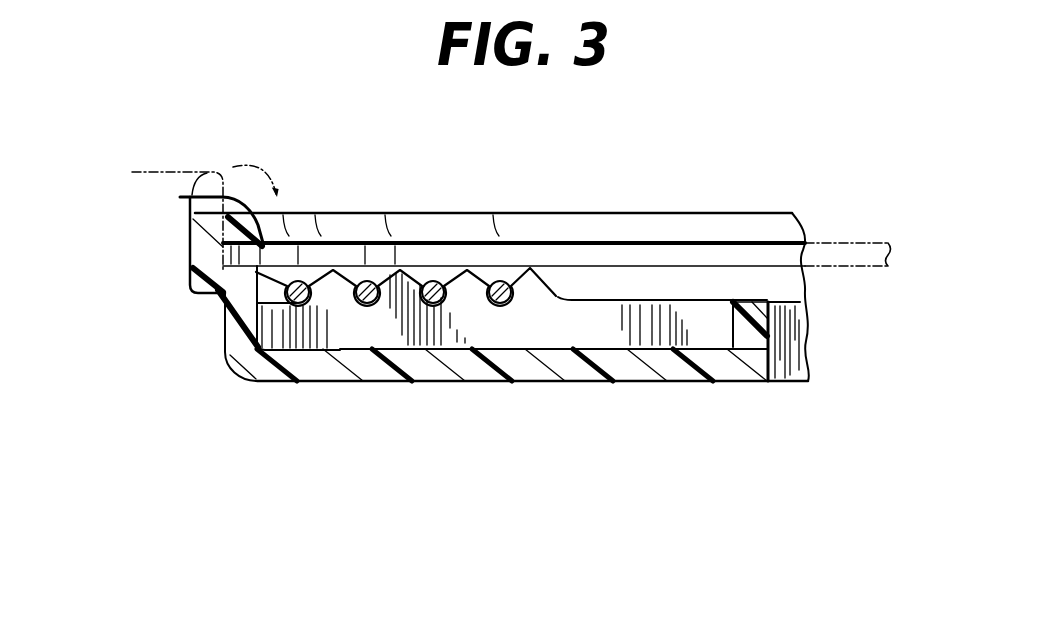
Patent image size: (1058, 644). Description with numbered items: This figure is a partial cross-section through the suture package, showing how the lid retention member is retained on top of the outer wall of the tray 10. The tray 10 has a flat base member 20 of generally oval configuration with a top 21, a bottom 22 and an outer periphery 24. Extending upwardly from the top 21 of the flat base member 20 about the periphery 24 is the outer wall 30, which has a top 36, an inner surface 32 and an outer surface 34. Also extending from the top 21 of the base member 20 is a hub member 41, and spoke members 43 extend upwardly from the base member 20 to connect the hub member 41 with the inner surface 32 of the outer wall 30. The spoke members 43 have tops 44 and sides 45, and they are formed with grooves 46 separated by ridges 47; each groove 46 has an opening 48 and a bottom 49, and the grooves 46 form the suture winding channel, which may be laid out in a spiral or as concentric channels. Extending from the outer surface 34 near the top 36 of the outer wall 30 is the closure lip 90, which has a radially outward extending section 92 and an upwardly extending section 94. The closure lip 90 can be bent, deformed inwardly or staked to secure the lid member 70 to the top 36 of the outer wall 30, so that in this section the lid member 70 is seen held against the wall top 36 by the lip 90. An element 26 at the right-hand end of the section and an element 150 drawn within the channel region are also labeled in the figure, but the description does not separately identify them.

The tray 10 is at (250, 485).
The flat base member 20 is at (666, 368).
The top of flat base member 21 is at (615, 348).
The bottom of flat base member 22 is at (640, 381).
The outer periphery of flat base member 24 is at (257, 383).
The end block 26 is at (797, 327).
The outer wall 30 is at (226, 338).
The inner surface of outer wall 32 is at (296, 304).
The outer surface of outer wall 34 is at (225, 313).
The top of outer wall 36 is at (250, 276).
The hub member 41 is at (760, 243).
The spoke members 43 is at (677, 325).
The tops of spoke members 44 is at (597, 298).
The sides of spoke members 45 is at (697, 327).
The grooves 46 is at (428, 276).
The ridges 47 is at (399, 270).
The openings of grooves 48 is at (511, 270).
The bottoms of grooves 49 is at (368, 304).
The lid member 70 is at (850, 240).
The closure lip 90 is at (185, 225).
The radially outward extending section 92 is at (195, 255).
The upwardly extending section 94 is at (195, 193).
The spring 150 is at (493, 303).